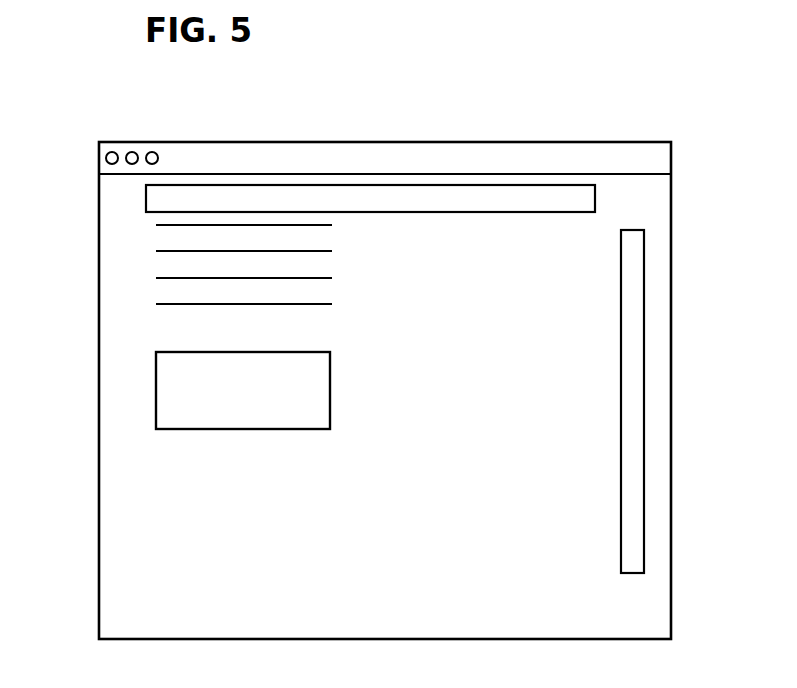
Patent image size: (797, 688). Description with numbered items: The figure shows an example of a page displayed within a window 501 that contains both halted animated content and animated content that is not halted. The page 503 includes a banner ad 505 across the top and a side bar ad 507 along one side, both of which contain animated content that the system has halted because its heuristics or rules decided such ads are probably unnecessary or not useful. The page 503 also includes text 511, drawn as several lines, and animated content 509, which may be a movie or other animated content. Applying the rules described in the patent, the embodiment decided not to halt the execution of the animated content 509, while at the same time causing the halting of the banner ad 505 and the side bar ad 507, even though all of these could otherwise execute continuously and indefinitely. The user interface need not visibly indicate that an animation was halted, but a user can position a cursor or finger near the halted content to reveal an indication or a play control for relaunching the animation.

The window 501 is at (473, 140).
The page 503 is at (126, 197).
The banner ad 505 is at (596, 197).
The side bar ad 507 is at (644, 287).
The animated content 509 is at (156, 406).
The text 511 is at (153, 287).